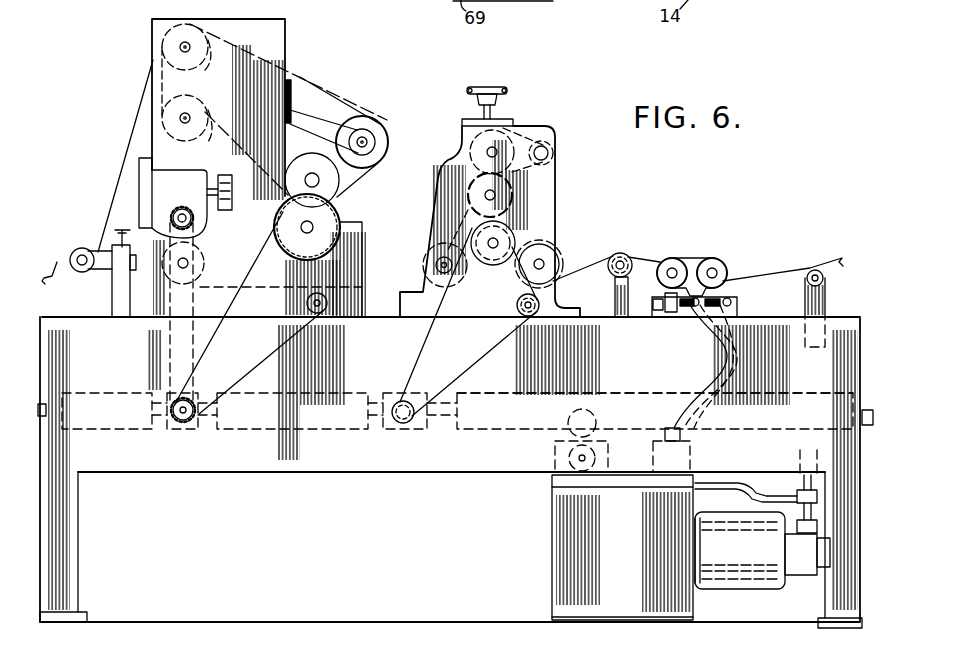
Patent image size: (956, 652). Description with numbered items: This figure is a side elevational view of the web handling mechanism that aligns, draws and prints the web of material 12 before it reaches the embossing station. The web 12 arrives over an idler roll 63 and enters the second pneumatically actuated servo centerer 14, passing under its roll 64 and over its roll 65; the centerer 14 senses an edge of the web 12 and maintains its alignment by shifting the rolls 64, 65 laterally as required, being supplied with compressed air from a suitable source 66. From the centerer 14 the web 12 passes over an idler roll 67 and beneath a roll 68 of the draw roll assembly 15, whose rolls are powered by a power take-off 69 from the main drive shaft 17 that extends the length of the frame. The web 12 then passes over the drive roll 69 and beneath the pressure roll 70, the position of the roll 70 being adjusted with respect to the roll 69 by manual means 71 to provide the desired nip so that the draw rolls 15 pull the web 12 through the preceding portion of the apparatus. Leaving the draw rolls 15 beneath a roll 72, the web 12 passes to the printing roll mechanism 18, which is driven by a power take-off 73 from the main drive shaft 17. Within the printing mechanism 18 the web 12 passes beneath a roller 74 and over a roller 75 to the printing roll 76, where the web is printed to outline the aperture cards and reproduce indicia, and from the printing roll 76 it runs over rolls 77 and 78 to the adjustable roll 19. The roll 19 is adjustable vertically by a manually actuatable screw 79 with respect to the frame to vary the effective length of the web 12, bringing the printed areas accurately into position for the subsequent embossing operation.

The web of material 12 is at (137, 121).
The second pneumatically actuated servo centerer 14 is at (737, 307).
The draw roll assembly 15 is at (556, 178).
The main drive shaft 17 is at (582, 393).
The printing roll mechanism 18 is at (286, 40).
The adjustable roll 19 is at (87, 248).
The idler roll 63 is at (826, 288).
The roll 64 is at (721, 266).
The roll 65 is at (658, 262).
The source of compressed air 66 is at (650, 548).
The idler roll 67 is at (628, 256).
The roll 68 is at (558, 253).
The power take-off / drive roll 69 is at (465, 208).
The pressure roll 70 is at (477, 143).
The manual means 71 is at (473, 90).
The roll 72 is at (430, 258).
The power take-off 73 is at (240, 334).
The roller 74 is at (204, 258).
The roller 75 is at (194, 131).
The printing roll 76 is at (310, 163).
The roll 77 is at (374, 128).
The roll 78 is at (195, 71).
The manually actuatable screw 79 is at (122, 230).